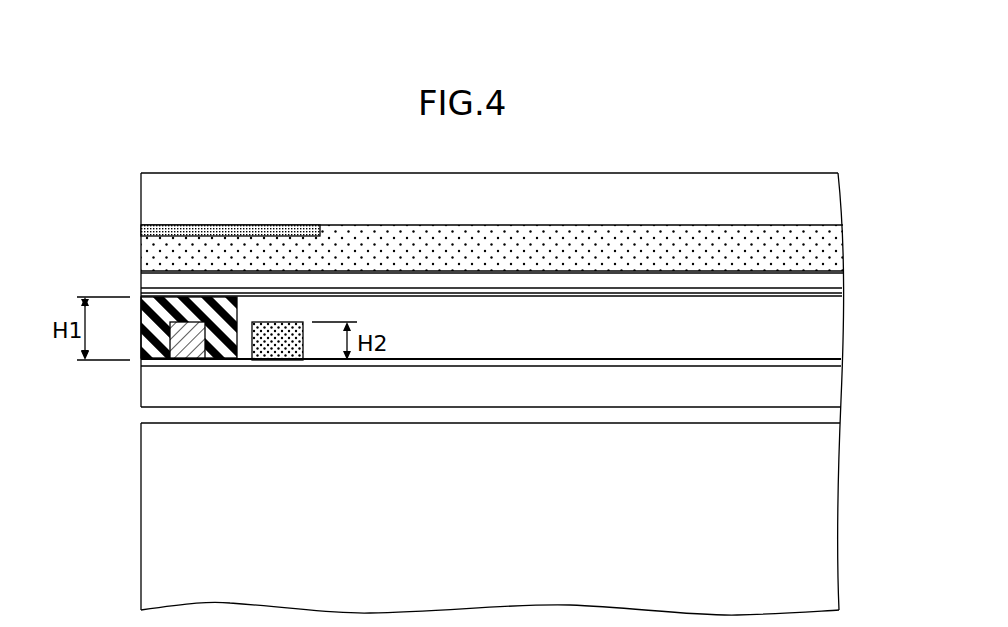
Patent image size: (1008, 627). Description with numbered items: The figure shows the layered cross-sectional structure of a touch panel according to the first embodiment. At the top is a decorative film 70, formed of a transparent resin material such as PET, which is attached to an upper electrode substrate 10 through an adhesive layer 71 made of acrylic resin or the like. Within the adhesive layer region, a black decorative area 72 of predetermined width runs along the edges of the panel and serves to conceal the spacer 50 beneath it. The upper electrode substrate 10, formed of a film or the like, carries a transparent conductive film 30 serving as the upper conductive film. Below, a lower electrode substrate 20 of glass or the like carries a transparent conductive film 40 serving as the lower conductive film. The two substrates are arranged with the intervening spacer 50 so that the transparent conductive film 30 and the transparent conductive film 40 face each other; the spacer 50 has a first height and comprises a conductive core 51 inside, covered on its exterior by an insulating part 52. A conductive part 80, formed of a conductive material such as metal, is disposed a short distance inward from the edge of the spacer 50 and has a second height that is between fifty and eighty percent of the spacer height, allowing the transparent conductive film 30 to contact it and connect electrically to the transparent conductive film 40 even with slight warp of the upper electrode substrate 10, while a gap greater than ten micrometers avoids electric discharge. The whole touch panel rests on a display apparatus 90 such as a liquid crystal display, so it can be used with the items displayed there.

The decorative film 70 is at (826, 199).
The adhesive layer 71 is at (826, 247).
The decorative area 72 is at (143, 231).
The upper electrode substrate 10 is at (826, 279).
The transparent conductive film 30 is at (826, 295).
The transparent conductive film 40 is at (826, 359).
The lower electrode substrate 20 is at (826, 387).
The display apparatus 90 is at (826, 512).
The conductive part 80 is at (282, 325).
The spacer 50 is at (137, 361).
The conductive core 51 is at (186, 357).
The insulating part 52 is at (156, 352).